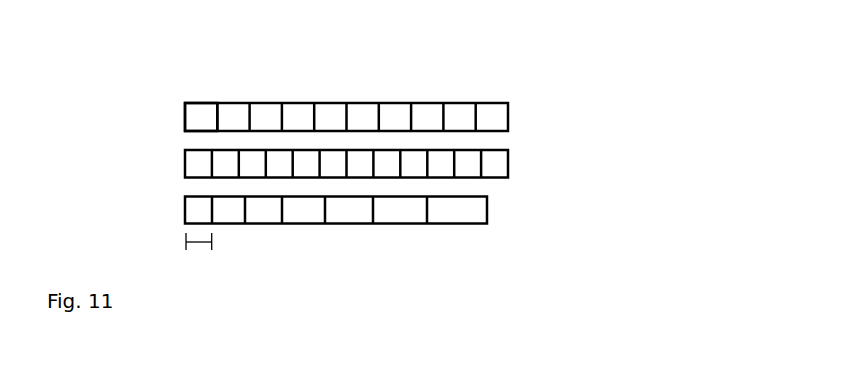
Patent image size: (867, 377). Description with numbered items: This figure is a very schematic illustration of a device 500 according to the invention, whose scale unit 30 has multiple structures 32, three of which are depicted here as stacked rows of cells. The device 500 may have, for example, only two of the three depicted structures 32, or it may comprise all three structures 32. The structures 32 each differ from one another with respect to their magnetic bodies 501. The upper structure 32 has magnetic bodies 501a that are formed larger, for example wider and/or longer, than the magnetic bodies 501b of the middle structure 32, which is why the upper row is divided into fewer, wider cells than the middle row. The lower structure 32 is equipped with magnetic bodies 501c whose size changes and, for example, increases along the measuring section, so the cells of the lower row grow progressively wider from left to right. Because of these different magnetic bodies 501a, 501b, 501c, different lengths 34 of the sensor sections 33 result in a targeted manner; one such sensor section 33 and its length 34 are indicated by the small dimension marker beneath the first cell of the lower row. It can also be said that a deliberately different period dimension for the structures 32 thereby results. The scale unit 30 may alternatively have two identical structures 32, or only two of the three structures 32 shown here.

The device 500 is at (111, 38).
The magnetic bodies 501 is at (208, 118).
The magnetic bodies of the upper structure 501a is at (198, 110).
The magnetic bodies of the middle structure 501b is at (197, 165).
The magnetic bodies of the lower structure 501c is at (197, 213).
The scale unit 30 is at (508, 100).
The structures 32 is at (508, 118).
The sensor sections 33 is at (203, 257).
The length of the sensor sections 34 is at (197, 245).